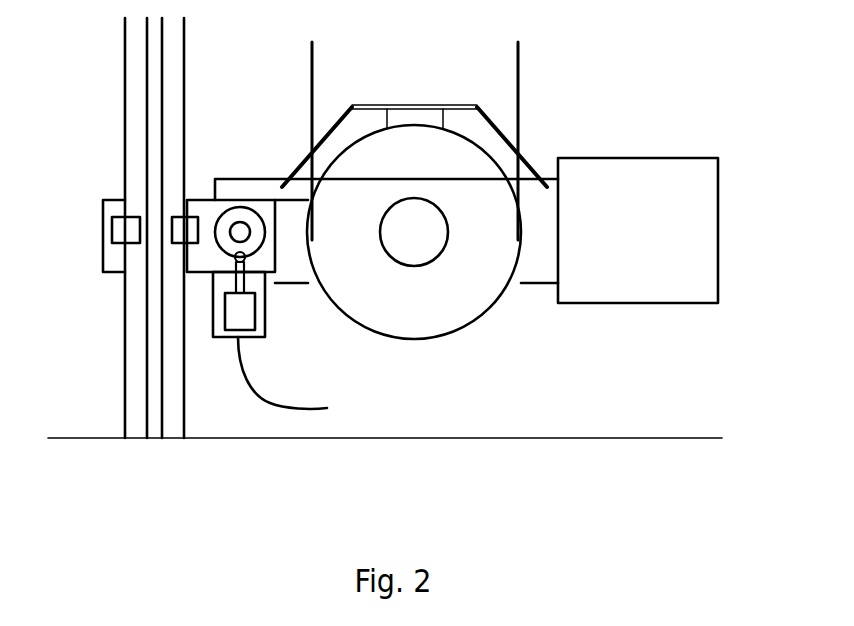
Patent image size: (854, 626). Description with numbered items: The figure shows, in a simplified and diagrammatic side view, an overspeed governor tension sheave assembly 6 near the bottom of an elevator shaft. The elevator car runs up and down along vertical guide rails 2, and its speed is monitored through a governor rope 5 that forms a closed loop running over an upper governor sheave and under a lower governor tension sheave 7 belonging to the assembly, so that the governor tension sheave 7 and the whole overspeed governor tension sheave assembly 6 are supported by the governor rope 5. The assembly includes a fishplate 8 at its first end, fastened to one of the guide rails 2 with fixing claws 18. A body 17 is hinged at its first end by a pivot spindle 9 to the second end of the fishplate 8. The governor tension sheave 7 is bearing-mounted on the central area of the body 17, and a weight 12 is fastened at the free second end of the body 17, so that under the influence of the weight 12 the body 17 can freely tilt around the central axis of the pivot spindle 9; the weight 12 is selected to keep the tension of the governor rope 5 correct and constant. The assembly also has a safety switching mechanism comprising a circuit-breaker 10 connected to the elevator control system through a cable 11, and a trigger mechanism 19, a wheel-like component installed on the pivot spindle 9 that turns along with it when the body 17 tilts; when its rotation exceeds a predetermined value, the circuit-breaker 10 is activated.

The guide rails 2 is at (128, 55).
The governor rope 5 is at (312, 58).
The overspeed governor tension sheave assembly 6 is at (618, 89).
The governor tension sheave 7 is at (432, 328).
The fishplate 8 is at (107, 257).
The pivot spindle 9 is at (233, 227).
The circuit-breaker 10 is at (247, 310).
The cable 11 is at (297, 407).
The weight 12 is at (673, 295).
The body 17 is at (533, 277).
The fixing claws 18 is at (112, 225).
The trigger mechanism 19 is at (248, 213).